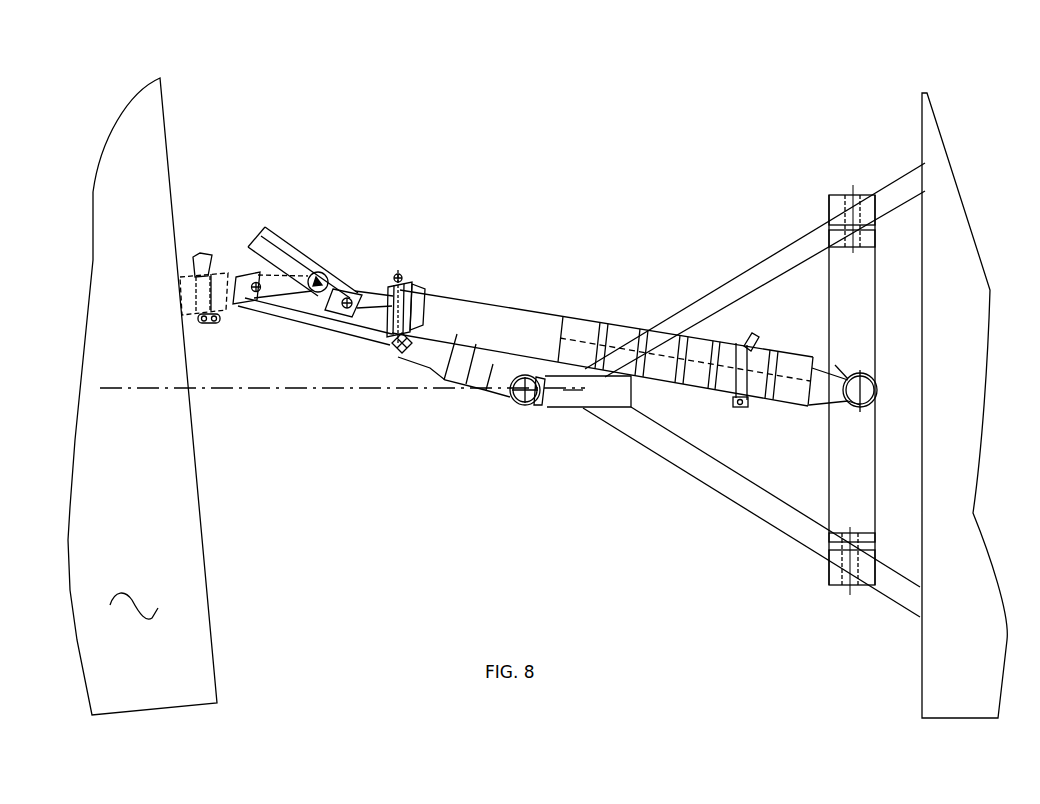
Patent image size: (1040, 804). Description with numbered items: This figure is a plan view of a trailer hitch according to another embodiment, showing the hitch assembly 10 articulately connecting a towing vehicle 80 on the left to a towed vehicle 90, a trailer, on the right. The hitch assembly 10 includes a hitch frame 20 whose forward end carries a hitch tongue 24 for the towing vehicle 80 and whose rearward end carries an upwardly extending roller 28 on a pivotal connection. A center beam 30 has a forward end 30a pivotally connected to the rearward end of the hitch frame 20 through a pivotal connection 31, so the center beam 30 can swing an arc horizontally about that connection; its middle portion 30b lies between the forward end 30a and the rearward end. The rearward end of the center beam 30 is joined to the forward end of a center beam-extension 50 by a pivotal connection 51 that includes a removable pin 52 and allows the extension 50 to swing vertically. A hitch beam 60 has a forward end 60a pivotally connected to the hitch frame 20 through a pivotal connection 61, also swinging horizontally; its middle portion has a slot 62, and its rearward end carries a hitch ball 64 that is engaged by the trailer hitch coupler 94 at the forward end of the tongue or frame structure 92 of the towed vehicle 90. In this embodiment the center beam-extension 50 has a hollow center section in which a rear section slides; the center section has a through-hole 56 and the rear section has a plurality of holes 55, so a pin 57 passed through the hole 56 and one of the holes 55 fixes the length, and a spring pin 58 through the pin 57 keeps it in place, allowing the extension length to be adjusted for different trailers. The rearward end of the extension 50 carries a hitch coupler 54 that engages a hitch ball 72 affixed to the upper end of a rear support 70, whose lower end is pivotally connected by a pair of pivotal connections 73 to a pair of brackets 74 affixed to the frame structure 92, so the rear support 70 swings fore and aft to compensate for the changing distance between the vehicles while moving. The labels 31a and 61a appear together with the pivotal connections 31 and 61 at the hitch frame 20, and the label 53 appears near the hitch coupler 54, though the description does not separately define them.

The hitch assembly 10 is at (409, 122).
The hitch frame 20 is at (232, 262).
The hitch tongue 24 is at (185, 270).
The upwardly extending roller 28 is at (298, 272).
The center beam 30 is at (366, 281).
The center beam forward end 30a is at (283, 275).
The center beam middle portion 30b is at (330, 270).
The pivotal connection 31 is at (275, 228).
The pivot pin 31a is at (267, 273).
The center beam-extension 50 is at (673, 355).
The pivotal connection 51 is at (410, 295).
The removable pin 52 is at (398, 277).
The ring 53 is at (860, 377).
The hitch coupler 54 is at (835, 365).
The holes 55 is at (590, 372).
The through-hole 56 is at (740, 395).
The pin 57 is at (752, 345).
The spring pin 58 is at (742, 407).
The hitch beam 60 is at (427, 368).
The hitch beam forward end 60a is at (318, 316).
The pivotal connection 61 is at (294, 331).
The link 61a is at (245, 299).
The slot 62 is at (327, 352).
The hitch ball 64 is at (513, 400).
The rear support 70 is at (857, 410).
The hitch ball 72 is at (860, 405).
The pivotal connection 73 is at (850, 222).
The brackets 74 is at (845, 225).
The towing vehicle 80 is at (132, 605).
The towed vehicle 90 is at (960, 620).
The tongue or frame structure 92 is at (658, 453).
The trailer hitch coupler 94 is at (522, 407).